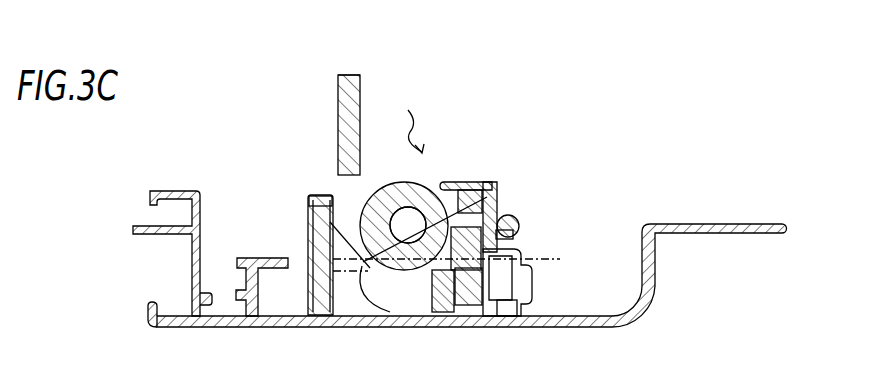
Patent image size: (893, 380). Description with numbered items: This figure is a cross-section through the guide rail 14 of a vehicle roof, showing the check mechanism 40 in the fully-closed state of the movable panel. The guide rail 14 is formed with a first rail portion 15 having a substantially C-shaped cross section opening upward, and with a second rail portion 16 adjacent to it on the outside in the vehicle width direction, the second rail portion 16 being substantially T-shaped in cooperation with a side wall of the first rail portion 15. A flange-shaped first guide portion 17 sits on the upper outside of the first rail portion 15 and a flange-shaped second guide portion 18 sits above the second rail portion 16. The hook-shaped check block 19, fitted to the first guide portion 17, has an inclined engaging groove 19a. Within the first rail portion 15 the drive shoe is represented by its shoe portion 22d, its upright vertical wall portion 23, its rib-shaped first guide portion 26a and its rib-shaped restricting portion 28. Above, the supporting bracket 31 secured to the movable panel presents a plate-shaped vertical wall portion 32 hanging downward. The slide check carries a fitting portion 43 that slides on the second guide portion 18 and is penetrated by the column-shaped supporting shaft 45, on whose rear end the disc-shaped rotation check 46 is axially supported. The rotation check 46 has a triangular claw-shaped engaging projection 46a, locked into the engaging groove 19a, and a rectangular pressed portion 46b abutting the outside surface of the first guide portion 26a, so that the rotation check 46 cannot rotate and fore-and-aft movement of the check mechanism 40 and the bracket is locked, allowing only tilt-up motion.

The guide rail 14 is at (695, 286).
The first rail portion 15 is at (370, 327).
The second rail portion 16 is at (497, 327).
The first guide portion 17 is at (467, 178).
The second guide portion 18 is at (518, 221).
The check block 19 is at (528, 195).
The engaging groove 19a is at (466, 186).
The shoe portion 22d is at (463, 324).
The vertical wall portion 23 is at (310, 250).
The first guide portion 26a is at (310, 218).
The restricting portion 28 is at (341, 326).
The supporting bracket 31 is at (340, 138).
The vertical wall portion 32 is at (340, 97).
The check mechanism 40 is at (410, 118).
The fitting portion 43 is at (520, 229).
The supporting shaft 45 is at (378, 200).
The rotation check 46 is at (404, 182).
The engaging projection 46a is at (446, 182).
The pressed portion 46b is at (400, 326).